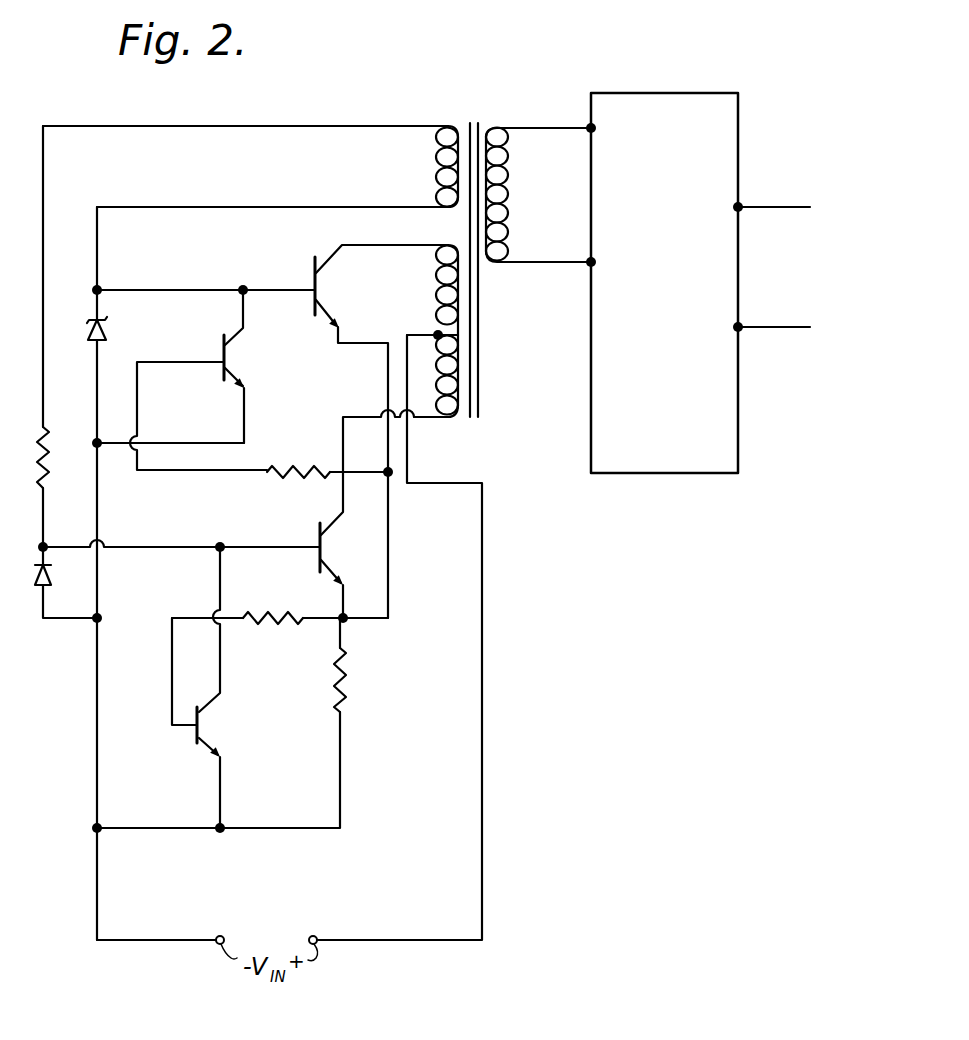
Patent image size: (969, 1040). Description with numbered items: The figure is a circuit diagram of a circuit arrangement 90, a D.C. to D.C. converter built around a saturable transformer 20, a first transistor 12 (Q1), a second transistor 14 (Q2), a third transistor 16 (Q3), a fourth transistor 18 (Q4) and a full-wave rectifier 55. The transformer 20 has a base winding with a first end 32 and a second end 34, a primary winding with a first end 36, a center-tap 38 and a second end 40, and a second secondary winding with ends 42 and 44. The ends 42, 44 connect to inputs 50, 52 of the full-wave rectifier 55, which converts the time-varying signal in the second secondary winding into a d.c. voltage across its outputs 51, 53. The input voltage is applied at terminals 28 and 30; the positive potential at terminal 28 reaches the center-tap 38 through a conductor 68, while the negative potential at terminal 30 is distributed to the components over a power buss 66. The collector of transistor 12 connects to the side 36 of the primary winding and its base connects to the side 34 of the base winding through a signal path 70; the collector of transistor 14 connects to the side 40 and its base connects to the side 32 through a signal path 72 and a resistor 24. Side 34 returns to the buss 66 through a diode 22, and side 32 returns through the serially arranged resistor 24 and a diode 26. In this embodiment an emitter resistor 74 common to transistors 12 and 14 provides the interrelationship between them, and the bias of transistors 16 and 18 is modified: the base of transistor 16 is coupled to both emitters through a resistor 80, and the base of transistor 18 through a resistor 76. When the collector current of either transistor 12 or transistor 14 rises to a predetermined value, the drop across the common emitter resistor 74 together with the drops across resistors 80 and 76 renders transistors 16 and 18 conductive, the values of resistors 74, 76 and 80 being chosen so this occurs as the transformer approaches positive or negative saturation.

The first transistor 12 is at (386, 431).
The second transistor 14 is at (364, 545).
The third transistor 16 is at (267, 366).
The fourth transistor 18 is at (245, 687).
The saturable transformer 20 is at (485, 116).
The diode 22 is at (107, 330).
The resistor 24 is at (49, 470).
The diode 26 is at (50, 580).
The terminal 28 is at (317, 921).
The terminal 30 is at (218, 935).
The first end of base winding 32 is at (429, 122).
The second end of base winding 34 is at (429, 202).
The first end of primary winding 36 is at (436, 245).
The center-tap 38 is at (431, 332).
The second end of primary winding 40 is at (433, 418).
The first end of second secondary winding 42 is at (524, 128).
The second end of second secondary winding 44 is at (526, 263).
The input of full-wave rectifier 50 is at (595, 132).
The output of full-wave rectifier 51 is at (757, 210).
The input of full-wave rectifier 52 is at (595, 267).
The output of full-wave rectifier 53 is at (757, 334).
The full-wave rectifier 55 is at (678, 222).
The power buss 66 is at (97, 900).
The conductor 68 is at (405, 940).
The signal path 70 is at (166, 280).
The signal path 72 is at (290, 547).
The emitter resistor 74 is at (348, 690).
The resistor 76 is at (283, 624).
The resistor 80 is at (290, 462).
The circuit arrangement 90 is at (691, 251).